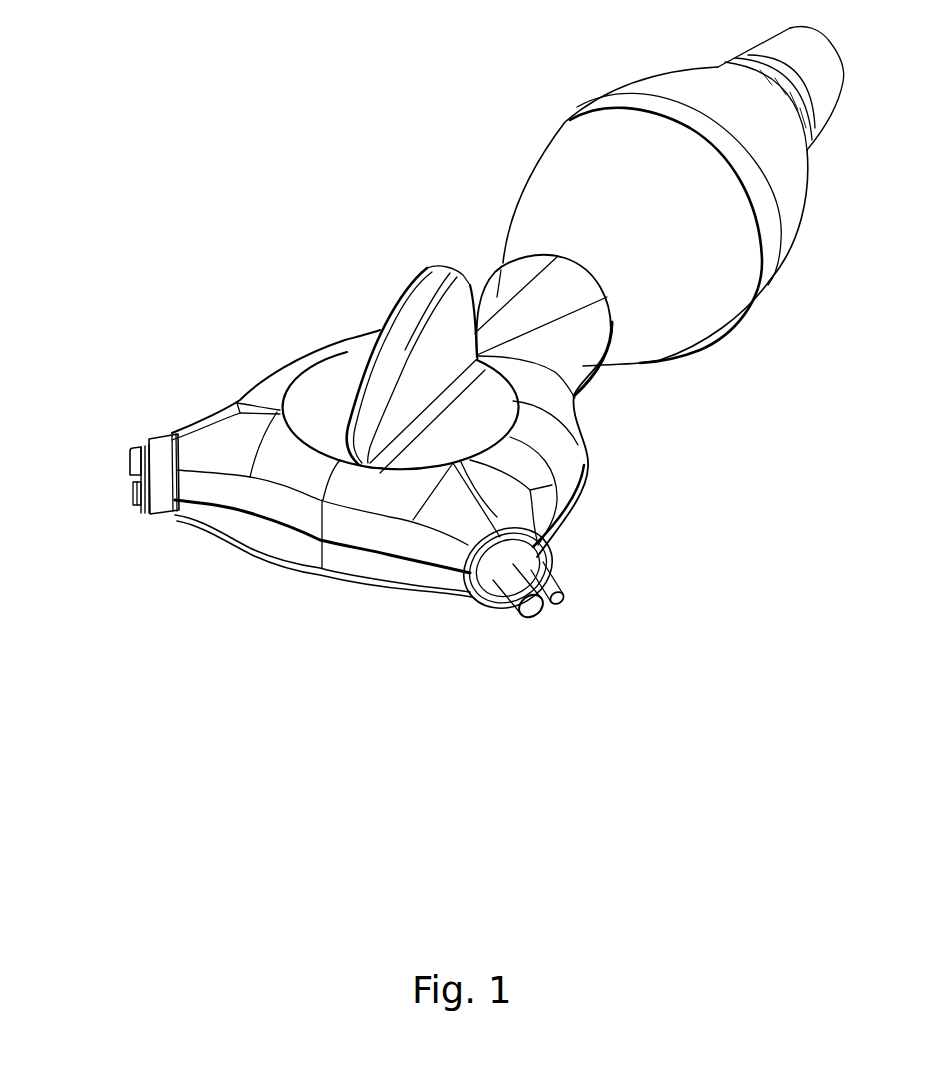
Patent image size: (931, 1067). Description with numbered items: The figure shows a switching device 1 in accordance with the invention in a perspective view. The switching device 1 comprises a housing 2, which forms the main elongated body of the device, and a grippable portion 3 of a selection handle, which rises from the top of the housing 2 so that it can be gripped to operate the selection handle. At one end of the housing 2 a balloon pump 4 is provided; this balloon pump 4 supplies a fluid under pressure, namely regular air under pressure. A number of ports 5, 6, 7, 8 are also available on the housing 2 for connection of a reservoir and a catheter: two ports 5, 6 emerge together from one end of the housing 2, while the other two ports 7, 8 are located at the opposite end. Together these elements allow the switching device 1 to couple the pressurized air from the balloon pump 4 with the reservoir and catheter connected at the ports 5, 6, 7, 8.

The switching device 1 is at (340, 118).
The housing 2 is at (290, 520).
The grippable portion 3 is at (397, 320).
The balloon pump 4 is at (583, 157).
The port 5 is at (565, 608).
The port 6 is at (528, 630).
The port 7 is at (132, 504).
The port 8 is at (128, 458).